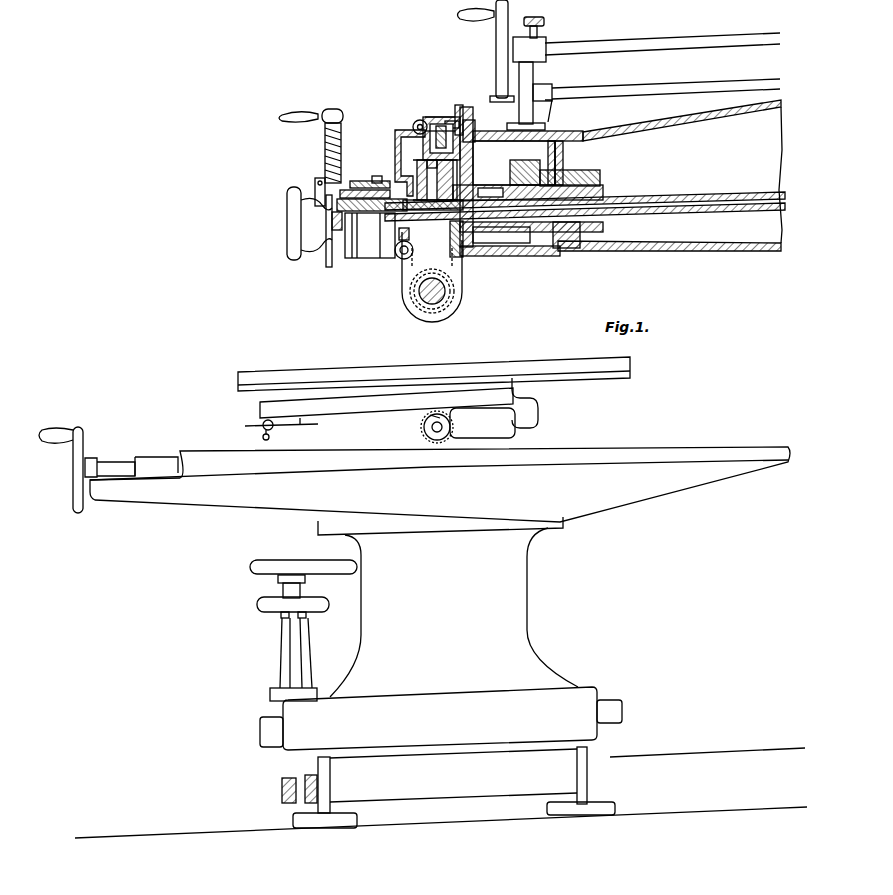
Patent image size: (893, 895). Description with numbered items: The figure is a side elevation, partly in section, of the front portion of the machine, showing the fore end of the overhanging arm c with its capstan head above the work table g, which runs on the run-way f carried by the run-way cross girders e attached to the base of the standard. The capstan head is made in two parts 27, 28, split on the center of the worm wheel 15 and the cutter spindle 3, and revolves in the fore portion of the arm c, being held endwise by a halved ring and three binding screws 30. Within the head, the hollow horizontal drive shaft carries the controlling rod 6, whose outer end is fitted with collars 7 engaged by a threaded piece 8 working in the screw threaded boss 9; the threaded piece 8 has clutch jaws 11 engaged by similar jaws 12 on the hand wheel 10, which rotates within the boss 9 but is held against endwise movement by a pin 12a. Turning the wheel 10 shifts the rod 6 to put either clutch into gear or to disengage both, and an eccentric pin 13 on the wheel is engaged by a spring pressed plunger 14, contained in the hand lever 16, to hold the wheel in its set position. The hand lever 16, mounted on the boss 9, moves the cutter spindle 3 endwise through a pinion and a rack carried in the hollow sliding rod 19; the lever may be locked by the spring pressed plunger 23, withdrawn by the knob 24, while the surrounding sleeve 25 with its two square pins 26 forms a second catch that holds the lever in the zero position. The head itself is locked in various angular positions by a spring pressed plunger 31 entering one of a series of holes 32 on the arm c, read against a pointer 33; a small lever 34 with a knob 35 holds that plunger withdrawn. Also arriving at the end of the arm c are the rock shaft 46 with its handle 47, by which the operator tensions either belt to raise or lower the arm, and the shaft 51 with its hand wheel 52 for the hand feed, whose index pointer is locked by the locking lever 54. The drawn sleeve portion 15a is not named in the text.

The cutter spindle 3 is at (445, 292).
The controlling rod 6 is at (610, 204).
The collars 7 is at (648, 204).
The threaded piece 8 is at (372, 212).
The screw threaded boss 9 is at (318, 222).
The hand wheel 10 is at (287, 223).
The clutch jaws 11 is at (354, 260).
The jaws 12 is at (330, 267).
The pin 12a is at (318, 202).
The eccentric pin 13 is at (342, 228).
The spring pressed plunger 14 is at (343, 165).
The worm wheel 15 is at (473, 157).
The lower casing 15a is at (515, 237).
The hand lever 16 is at (342, 128).
The hollow sliding rod 19 is at (398, 262).
The spring pressed plunger 23 is at (360, 181).
The knob or milled head 24 is at (318, 178).
The sleeve 25 is at (368, 180).
The square pins 26 is at (374, 183).
The capstan head part 27 is at (403, 140).
The capstan head part 28 is at (443, 117).
The binding screws 30 is at (563, 149).
The spring pressed plunger 31 is at (474, 122).
The holes 32 is at (460, 125).
The pointer 33 is at (465, 110).
The small lever 34 is at (422, 120).
The knob or enlargement 35 is at (415, 121).
The rock shaft 46 is at (598, 92).
The handle 47 is at (545, 92).
The shaft 51 is at (620, 44).
The hand wheel 52 is at (508, 15).
The locking lever 54 is at (546, 22).
The overhanging arm c is at (724, 116).
The run-way cross girders e is at (787, 757).
The run-way f is at (323, 756).
The work table g is at (490, 370).